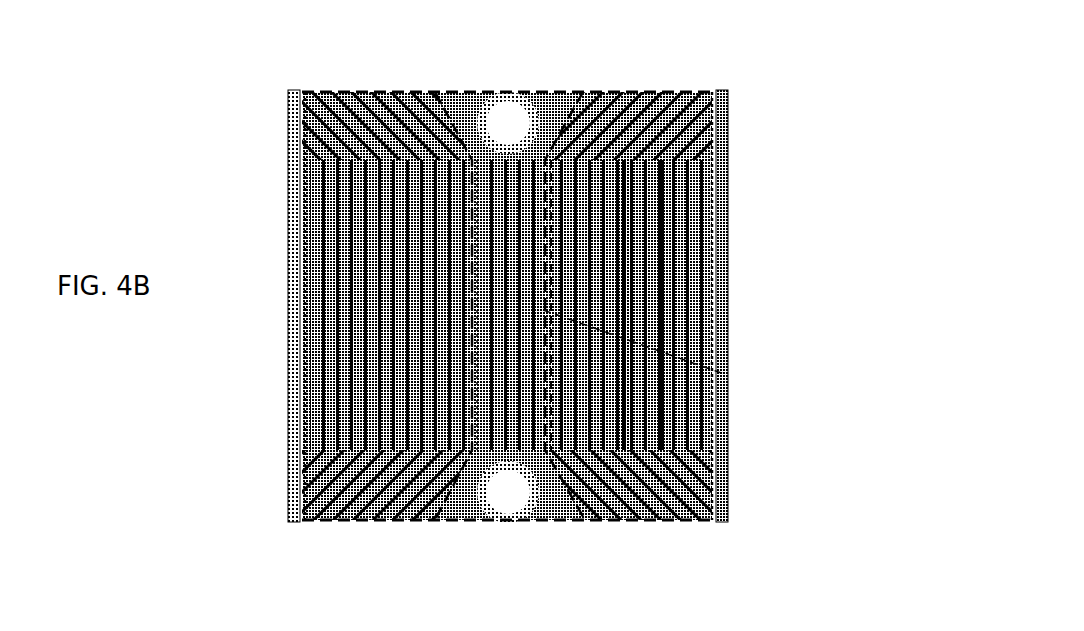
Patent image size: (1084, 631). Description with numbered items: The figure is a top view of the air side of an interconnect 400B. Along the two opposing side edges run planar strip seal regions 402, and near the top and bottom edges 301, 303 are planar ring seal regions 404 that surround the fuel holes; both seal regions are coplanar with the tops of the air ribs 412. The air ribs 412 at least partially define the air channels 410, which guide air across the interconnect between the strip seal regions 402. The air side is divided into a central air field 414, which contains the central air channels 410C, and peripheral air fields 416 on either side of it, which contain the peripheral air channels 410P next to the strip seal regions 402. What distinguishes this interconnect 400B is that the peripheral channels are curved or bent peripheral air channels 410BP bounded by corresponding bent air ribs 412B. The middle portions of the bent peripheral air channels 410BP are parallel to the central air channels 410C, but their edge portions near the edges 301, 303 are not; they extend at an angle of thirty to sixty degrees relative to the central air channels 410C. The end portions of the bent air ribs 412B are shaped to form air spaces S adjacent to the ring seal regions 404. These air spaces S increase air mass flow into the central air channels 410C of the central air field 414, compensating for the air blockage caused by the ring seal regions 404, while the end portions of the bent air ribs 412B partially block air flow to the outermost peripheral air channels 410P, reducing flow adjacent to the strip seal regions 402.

The interconnect 400B is at (222, 74).
The edge 301 is at (338, 90).
The edge 303 is at (332, 522).
The ring seal region 404 is at (496, 90).
The air space S is at (562, 90).
The air channel 410 is at (870, 96).
The bent peripheral air channel 410BP is at (625, 158).
The central air channel 410C is at (525, 185).
The peripheral air channel 410P is at (668, 203).
The air rib 412 is at (493, 270).
The bent air rib 412B is at (628, 310).
The central air field 414 is at (727, 375).
The peripheral air field 416 is at (307, 313).
The strip seal region 402 is at (727, 435).